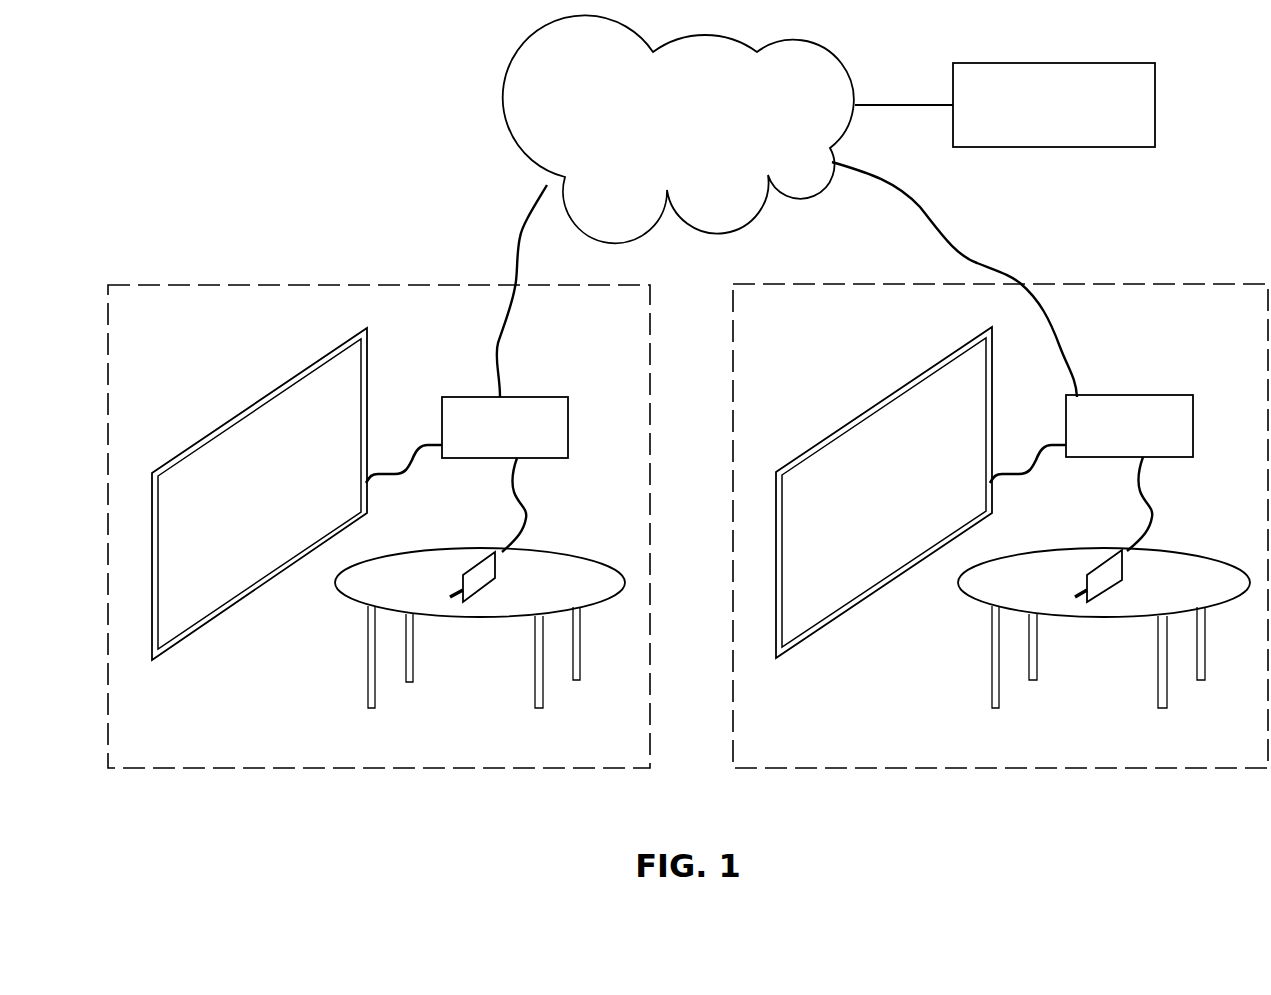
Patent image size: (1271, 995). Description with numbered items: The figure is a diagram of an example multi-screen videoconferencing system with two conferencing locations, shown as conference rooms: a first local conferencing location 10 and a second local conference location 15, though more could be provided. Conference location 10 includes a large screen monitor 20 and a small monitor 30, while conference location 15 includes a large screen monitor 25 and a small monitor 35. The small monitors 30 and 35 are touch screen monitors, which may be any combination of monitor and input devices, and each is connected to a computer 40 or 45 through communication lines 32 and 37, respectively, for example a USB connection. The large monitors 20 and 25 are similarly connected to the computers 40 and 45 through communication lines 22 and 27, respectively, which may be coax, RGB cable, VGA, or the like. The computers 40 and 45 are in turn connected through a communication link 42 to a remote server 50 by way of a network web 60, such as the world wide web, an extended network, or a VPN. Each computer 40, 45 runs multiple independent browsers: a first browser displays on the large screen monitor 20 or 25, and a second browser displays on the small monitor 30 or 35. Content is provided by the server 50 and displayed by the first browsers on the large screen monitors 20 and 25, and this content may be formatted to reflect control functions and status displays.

The first local conferencing location 10 is at (379, 526).
The second local conference location 15 is at (1000, 526).
The large screen monitor 20 is at (359, 327).
The communication line 22 is at (435, 440).
The large screen monitor 25 is at (953, 350).
The communication line 27 is at (1058, 438).
The small monitor 30 is at (450, 565).
The communication line 32 is at (523, 535).
The small monitor 35 is at (1075, 565).
The communication line 37 is at (1150, 531).
The computer 40 is at (505, 427).
The communication link 42 is at (498, 370).
The computer 45 is at (1129, 426).
The remote server 50 is at (1005, 105).
The network web 60 is at (678, 129).